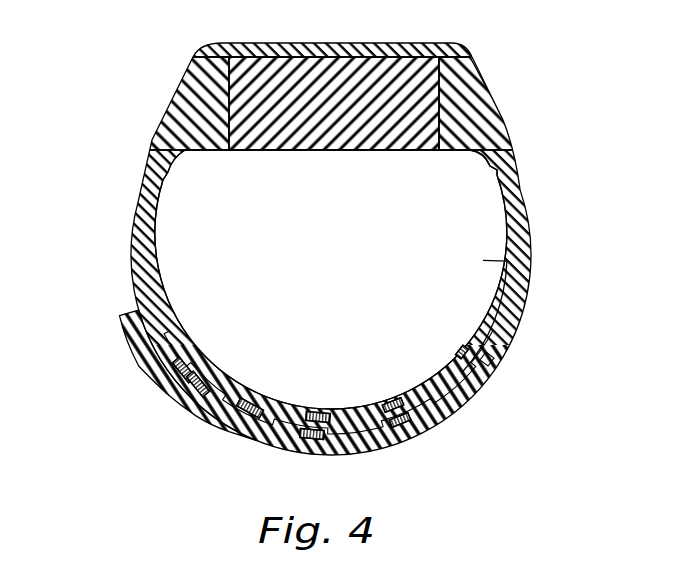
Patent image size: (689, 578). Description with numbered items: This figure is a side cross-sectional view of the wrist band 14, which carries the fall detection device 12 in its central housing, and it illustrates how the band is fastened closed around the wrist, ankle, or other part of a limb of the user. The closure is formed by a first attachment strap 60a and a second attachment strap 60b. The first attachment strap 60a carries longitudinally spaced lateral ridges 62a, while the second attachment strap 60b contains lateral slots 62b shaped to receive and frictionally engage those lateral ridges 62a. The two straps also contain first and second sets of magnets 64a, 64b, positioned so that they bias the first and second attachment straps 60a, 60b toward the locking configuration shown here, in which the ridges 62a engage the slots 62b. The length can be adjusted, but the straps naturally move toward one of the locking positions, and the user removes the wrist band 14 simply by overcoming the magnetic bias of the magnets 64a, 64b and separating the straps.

The fall detection device 12 is at (430, 90).
The wrist band 14 is at (495, 100).
The first attachment strap 60a is at (137, 270).
The second attachment strap 60b is at (462, 397).
The lateral ridges 62a is at (492, 361).
The lateral slots 62b is at (480, 368).
The first set of magnets 64a is at (315, 410).
The second set of magnets 64b is at (305, 440).